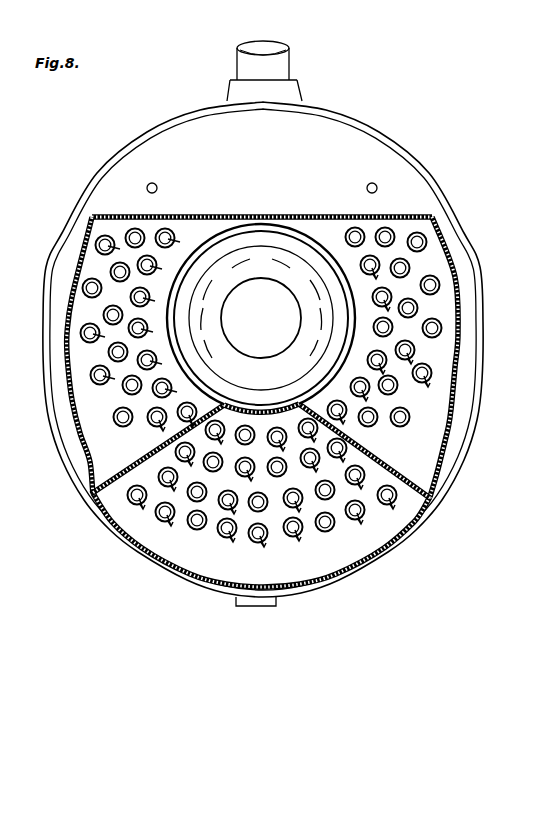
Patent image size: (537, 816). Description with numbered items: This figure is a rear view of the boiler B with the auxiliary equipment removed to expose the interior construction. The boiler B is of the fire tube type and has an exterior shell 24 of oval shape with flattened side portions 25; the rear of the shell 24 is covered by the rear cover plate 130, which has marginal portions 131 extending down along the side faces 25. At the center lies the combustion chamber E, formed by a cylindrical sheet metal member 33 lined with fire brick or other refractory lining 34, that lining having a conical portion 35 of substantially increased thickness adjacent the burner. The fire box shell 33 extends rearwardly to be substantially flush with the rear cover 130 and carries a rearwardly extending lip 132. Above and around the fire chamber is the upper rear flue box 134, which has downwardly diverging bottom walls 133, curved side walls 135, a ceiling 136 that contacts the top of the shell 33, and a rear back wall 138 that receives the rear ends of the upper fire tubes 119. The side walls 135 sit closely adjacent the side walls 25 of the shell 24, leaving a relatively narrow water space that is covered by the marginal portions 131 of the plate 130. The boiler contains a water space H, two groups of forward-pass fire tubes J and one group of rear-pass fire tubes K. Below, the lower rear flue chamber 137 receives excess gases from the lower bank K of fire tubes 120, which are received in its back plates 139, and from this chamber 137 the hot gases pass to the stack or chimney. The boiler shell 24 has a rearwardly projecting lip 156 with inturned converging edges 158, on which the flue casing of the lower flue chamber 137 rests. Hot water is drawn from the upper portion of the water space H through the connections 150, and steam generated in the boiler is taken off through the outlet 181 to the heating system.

The exterior shell 24 is at (148, 132).
The flattened side portions 25 is at (480, 295).
The outlet 181 is at (292, 60).
The rearwardly projecting lip 156 is at (308, 597).
The rear cover plate 130 is at (197, 127).
The boiler B is at (430, 164).
The connections 150 is at (157, 183).
The ceiling 136 is at (210, 214).
The upper rear flue box 134 is at (448, 247).
The marginal portions 131 is at (470, 395).
The lower rear flue chamber 137 is at (340, 562).
The curved side walls 135 is at (460, 270).
The back plates 139 is at (153, 537).
The downwardly diverging bottom walls 133 is at (118, 492).
The inturned converging edges 158 is at (87, 515).
The cylindrical sheet metal member 33 is at (297, 230).
The refractory lining 34 is at (345, 338).
The rear back wall 138 is at (170, 241).
The conical portion 35 is at (293, 272).
The rearwardly extending lip 132 is at (268, 404).
The combustion chamber E is at (248, 255).
The forward-pass fire tubes J is at (452, 350).
The water space H is at (458, 447).
The rear-pass fire tubes K is at (200, 538).
The upper fire tubes 119 is at (100, 238).
The fire tubes 120 is at (275, 537).